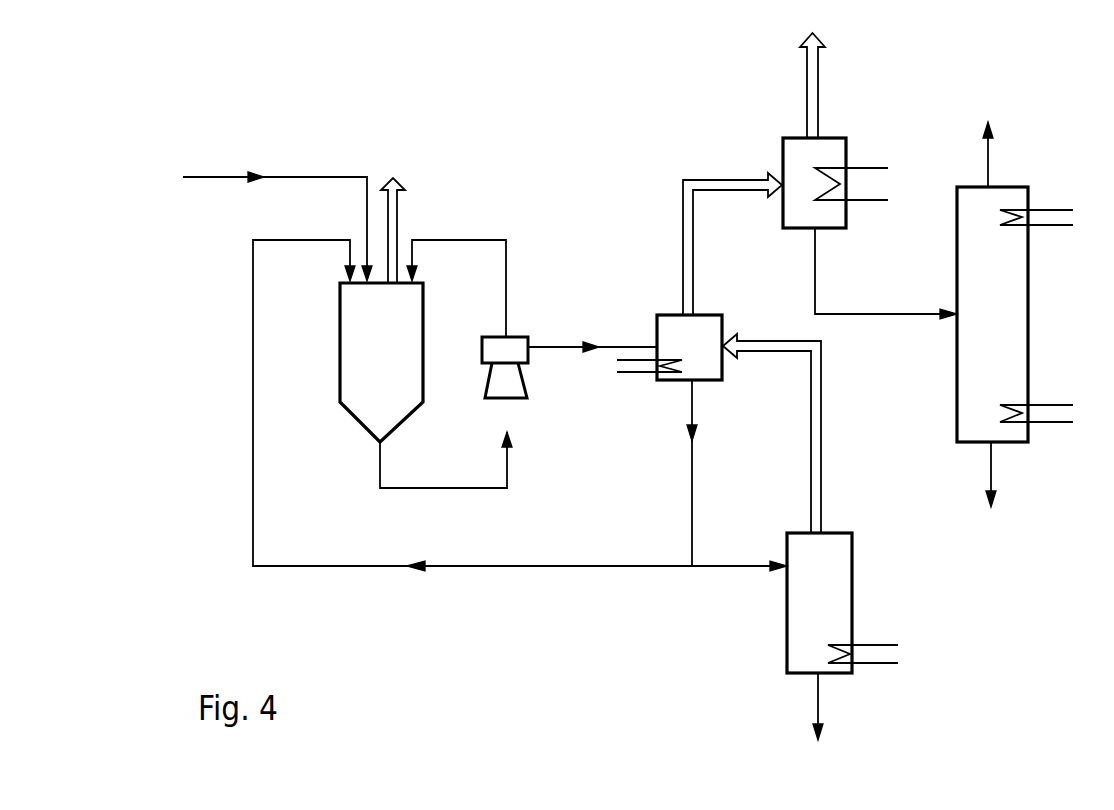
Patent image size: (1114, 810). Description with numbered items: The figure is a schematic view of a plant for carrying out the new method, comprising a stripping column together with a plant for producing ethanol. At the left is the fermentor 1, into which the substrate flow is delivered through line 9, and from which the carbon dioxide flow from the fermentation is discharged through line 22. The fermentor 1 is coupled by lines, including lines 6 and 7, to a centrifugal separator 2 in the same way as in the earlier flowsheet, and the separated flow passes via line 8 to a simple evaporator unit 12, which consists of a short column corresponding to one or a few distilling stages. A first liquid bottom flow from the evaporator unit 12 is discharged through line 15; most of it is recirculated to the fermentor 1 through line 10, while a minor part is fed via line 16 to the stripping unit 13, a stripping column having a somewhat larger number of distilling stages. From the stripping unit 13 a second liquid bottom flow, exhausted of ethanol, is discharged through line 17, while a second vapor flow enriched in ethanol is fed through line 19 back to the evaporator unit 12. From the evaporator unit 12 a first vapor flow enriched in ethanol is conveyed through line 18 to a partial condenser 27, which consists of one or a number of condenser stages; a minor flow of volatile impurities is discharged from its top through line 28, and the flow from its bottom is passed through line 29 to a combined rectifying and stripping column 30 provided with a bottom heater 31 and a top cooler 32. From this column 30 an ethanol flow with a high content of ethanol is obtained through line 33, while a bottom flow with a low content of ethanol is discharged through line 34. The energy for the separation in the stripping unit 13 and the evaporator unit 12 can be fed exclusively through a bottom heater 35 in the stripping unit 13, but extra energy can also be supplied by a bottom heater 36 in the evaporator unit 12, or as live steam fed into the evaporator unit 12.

The fermentor 1 is at (393, 333).
The centrifugal separator 2 is at (510, 350).
The recycle line 6 is at (440, 488).
The feed line 7 is at (460, 240).
The product gas line 8 is at (612, 347).
The substrate line 9 is at (310, 177).
The recirculation line 10 is at (465, 566).
The evaporator unit 12 is at (698, 338).
The stripping unit 13 is at (832, 562).
The first liquid bottom flow line 15 is at (692, 470).
The feed line to stripping unit 16 is at (745, 567).
The second bottom flow line 17 is at (818, 700).
The first vapor flow line 18 is at (705, 178).
The second vapor flow line 19 is at (821, 470).
The CO2 discharge line 22 is at (397, 200).
The partial condenser 27 is at (832, 157).
The volatile impurities line 28 is at (818, 77).
The condenser bottom flow line 29 is at (857, 314).
The combined rectifying and stripping column 30 is at (1000, 335).
The bottom heater 31 is at (1062, 403).
The top cooler 32 is at (1057, 208).
The ethanol flow line 33 is at (990, 157).
The bottom flow line 34 is at (991, 470).
The bottom heater of stripping unit 35 is at (885, 643).
The bottom heater of evaporator unit 36 is at (642, 377).